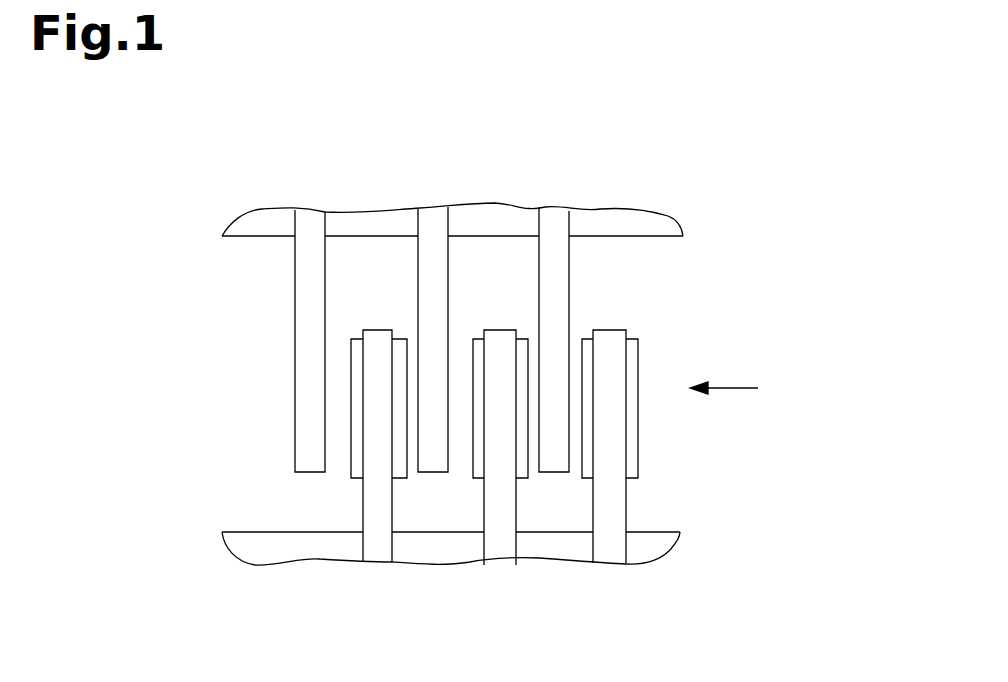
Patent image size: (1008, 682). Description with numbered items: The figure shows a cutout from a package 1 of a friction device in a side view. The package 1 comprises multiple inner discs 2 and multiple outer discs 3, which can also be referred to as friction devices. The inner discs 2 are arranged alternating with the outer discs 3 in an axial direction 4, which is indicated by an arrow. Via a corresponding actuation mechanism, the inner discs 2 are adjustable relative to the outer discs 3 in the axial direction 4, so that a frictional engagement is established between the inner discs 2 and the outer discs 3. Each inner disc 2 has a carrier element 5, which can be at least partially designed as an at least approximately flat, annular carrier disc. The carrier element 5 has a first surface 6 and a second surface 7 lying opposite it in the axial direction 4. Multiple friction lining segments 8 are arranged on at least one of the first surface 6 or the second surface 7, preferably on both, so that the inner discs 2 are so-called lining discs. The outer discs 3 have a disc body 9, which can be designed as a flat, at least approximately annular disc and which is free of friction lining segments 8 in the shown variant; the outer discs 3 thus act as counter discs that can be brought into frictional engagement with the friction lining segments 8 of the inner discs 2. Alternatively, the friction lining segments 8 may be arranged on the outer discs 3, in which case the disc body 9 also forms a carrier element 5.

The package 1 is at (813, 131).
The inner disc 2 is at (640, 517).
The outer disc 3 is at (572, 213).
The axial direction 4 is at (738, 388).
The carrier element 5 is at (355, 492).
The first surface 6 is at (395, 372).
The second surface 7 is at (360, 371).
The friction lining segment 8 is at (475, 487).
The disc body 9 is at (553, 493).